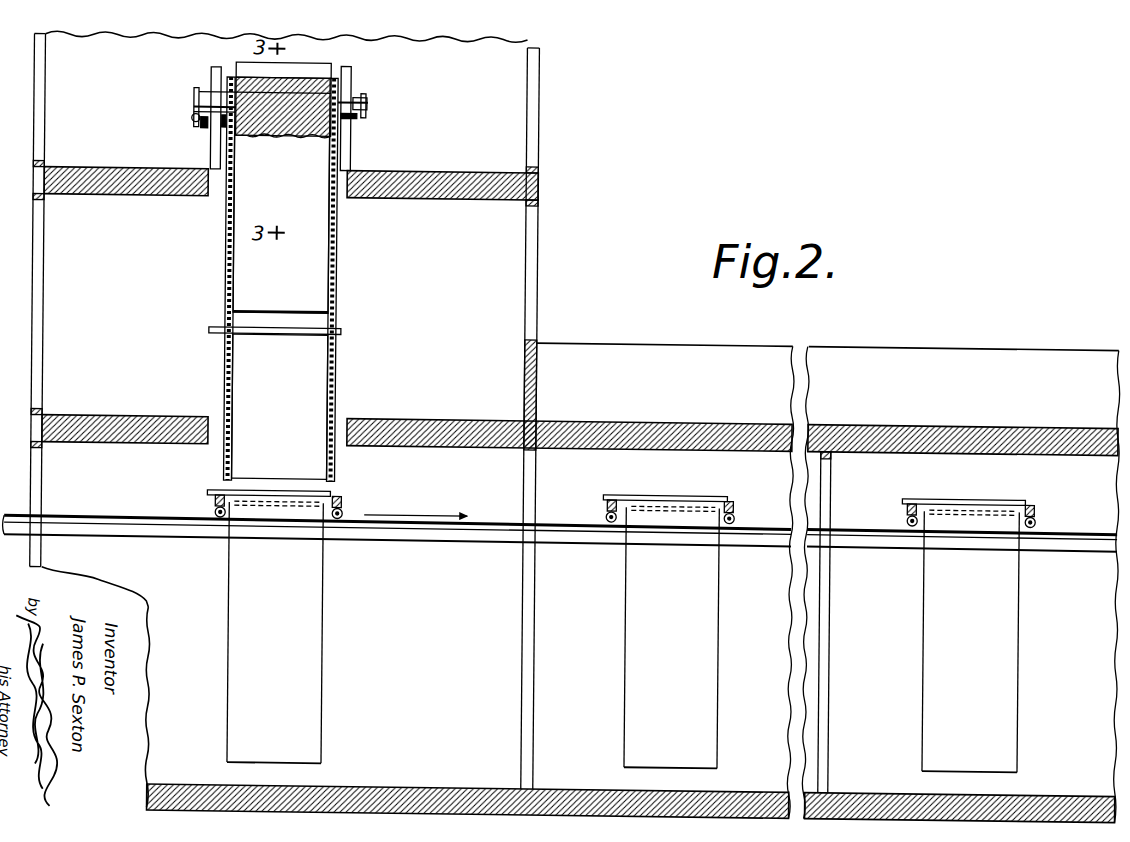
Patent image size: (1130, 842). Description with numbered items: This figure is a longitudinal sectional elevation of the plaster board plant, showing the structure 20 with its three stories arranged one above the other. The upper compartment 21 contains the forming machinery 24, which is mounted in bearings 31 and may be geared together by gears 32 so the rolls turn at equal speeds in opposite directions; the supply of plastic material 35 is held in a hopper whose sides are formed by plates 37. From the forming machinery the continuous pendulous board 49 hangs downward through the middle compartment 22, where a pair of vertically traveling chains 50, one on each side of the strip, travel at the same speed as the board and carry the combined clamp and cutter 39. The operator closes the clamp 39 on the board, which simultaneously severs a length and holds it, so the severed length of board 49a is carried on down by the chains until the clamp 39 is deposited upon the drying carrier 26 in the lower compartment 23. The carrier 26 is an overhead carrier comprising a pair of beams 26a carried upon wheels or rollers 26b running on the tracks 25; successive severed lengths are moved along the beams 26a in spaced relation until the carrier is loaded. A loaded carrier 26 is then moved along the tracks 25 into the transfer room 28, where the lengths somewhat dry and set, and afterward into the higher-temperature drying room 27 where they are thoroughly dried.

The structure 20 is at (540, 276).
The compartment 21 is at (461, 128).
The compartment 22 is at (421, 322).
The compartment 23 is at (428, 646).
The forming machinery 24 is at (366, 85).
The tracks 25 is at (445, 545).
The drying carrier 26 is at (346, 508).
The beams 26a is at (213, 504).
The wheels or rollers 26b is at (343, 524).
The drying room 27 is at (871, 690).
The transfer room 28 is at (765, 690).
The bearings 31 is at (195, 96).
The gears 32 is at (356, 120).
The plastic material 35 is at (302, 81).
The plates 37 is at (215, 71).
The clamp 39 is at (322, 332).
The pendulous board 49 is at (281, 224).
The severed length of board 49a is at (624, 553).
The chains 50 is at (224, 271).